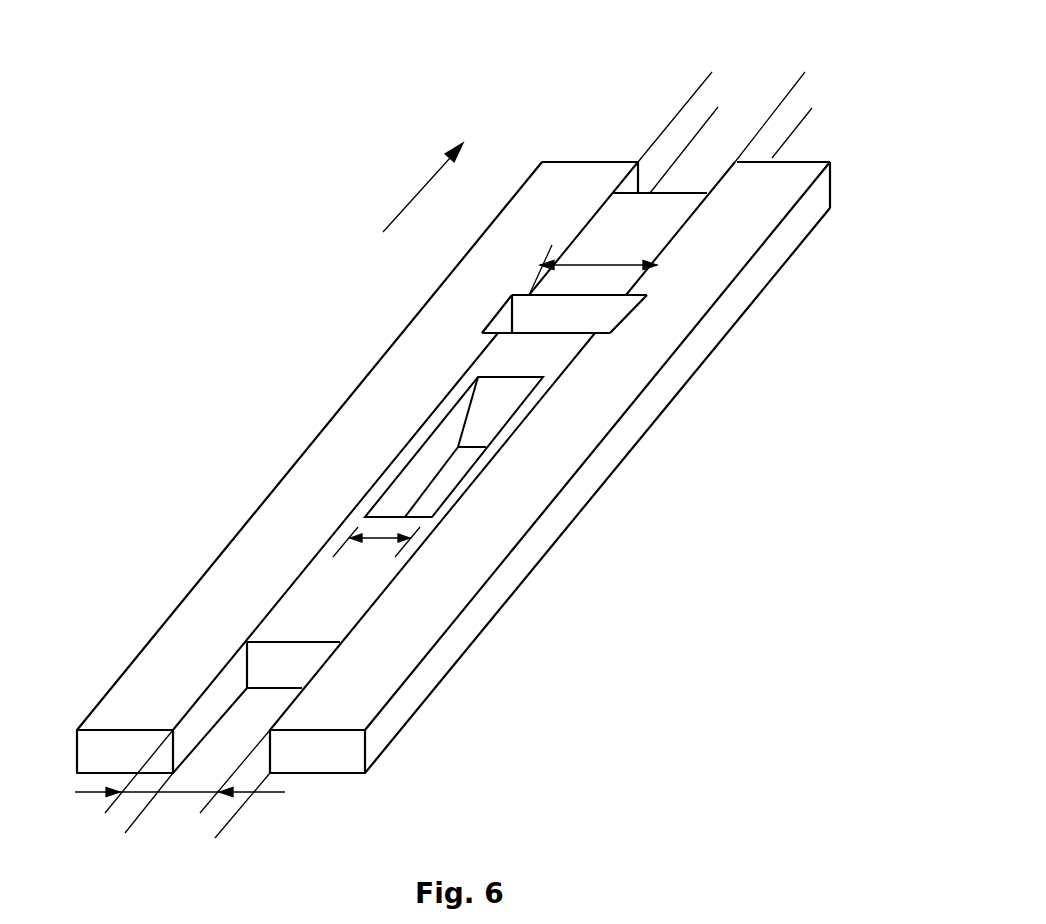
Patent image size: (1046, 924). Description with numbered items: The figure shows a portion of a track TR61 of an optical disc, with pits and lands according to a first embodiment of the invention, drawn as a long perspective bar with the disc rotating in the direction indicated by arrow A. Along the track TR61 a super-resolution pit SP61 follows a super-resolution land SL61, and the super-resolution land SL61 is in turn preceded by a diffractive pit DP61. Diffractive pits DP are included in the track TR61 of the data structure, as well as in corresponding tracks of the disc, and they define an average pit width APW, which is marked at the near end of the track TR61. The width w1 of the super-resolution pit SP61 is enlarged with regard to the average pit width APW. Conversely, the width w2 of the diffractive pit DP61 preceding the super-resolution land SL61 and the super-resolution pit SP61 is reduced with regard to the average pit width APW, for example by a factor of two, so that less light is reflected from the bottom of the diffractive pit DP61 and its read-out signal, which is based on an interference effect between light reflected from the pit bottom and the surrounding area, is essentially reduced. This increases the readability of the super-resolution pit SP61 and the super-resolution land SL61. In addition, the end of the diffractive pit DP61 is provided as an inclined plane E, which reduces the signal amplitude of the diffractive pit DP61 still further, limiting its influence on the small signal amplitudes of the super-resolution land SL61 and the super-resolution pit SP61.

The track TR61 is at (752, 110).
The diffractive pits DP is at (683, 183).
The super-resolution pit SP61 is at (492, 315).
The super-resolution land SL61 is at (503, 353).
The inclined plane E is at (487, 418).
The diffractive pit DP61 is at (480, 456).
The average pit width APW is at (175, 793).
The width of super-resolution pit w1 is at (593, 250).
The width of diffractive pit w2 is at (377, 538).
The arrow indicating rotation direction A is at (423, 187).